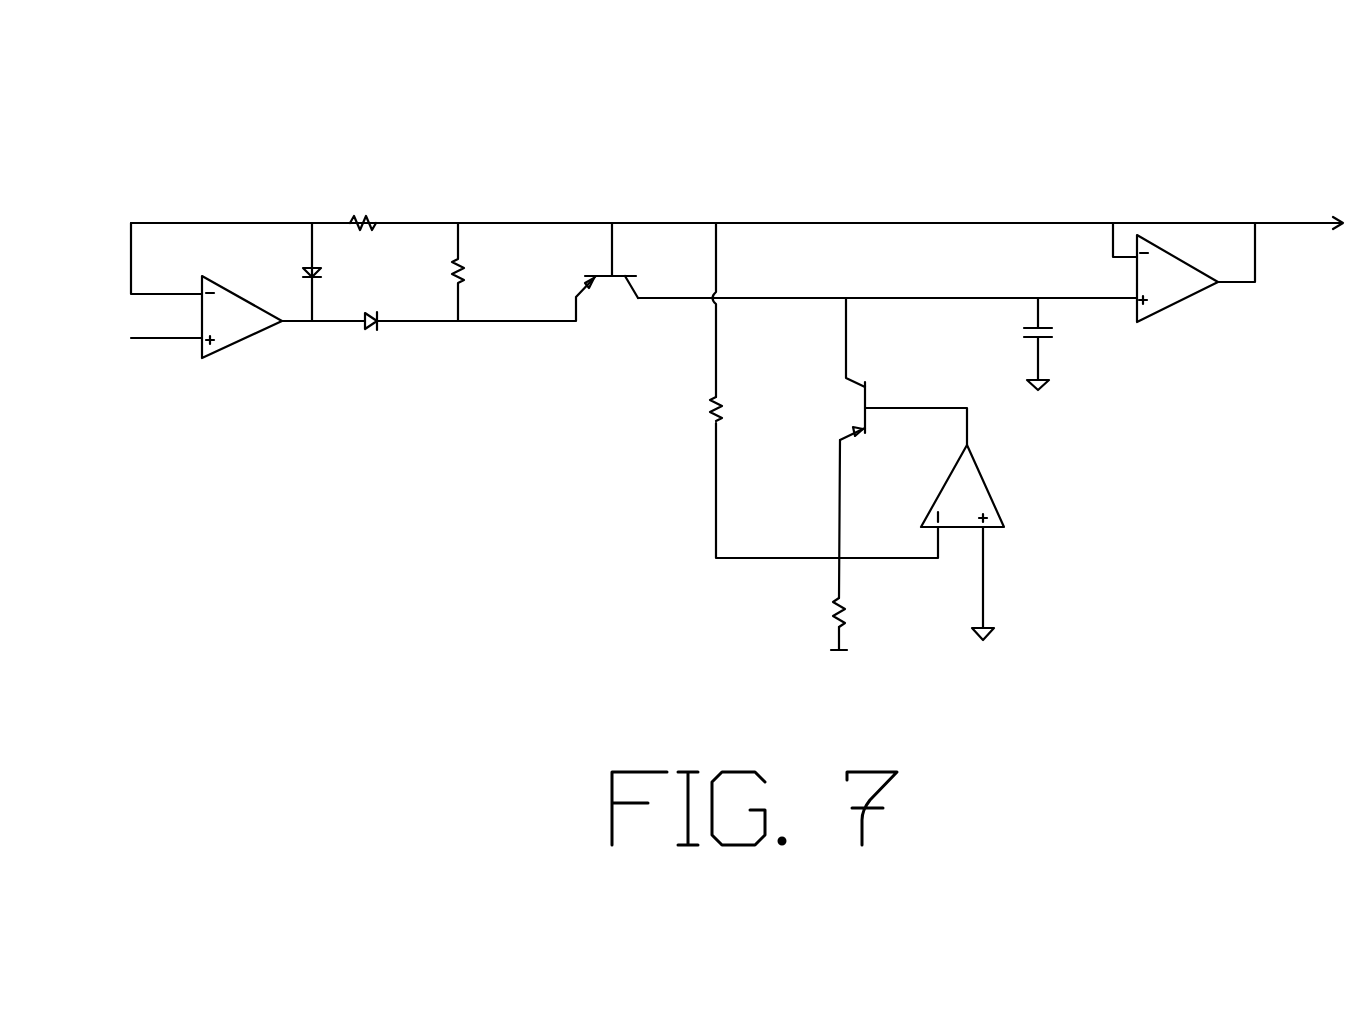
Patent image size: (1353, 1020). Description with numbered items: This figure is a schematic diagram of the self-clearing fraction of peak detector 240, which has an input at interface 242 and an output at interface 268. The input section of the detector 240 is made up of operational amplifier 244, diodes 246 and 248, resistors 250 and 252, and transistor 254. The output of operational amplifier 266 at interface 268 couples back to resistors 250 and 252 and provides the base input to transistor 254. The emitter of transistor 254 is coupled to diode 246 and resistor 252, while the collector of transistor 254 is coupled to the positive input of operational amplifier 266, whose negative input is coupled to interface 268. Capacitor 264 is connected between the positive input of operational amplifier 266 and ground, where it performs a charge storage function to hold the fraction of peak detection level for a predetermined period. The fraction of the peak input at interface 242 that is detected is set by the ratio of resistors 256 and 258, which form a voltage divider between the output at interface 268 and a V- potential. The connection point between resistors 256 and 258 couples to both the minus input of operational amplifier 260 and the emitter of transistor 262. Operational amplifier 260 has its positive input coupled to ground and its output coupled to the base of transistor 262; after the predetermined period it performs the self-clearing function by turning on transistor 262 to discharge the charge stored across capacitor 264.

The self-clearing fraction of peak detector 240 is at (366, 121).
The interface 242 is at (181, 340).
The operational amplifier 244 is at (230, 346).
The diode 246 is at (363, 328).
The diode 248 is at (306, 266).
The resistor 250 is at (372, 229).
The resistor 252 is at (465, 272).
The transistor 254 is at (622, 272).
The resistor 256 is at (700, 400).
The resistor 258 is at (833, 604).
The operational amplifier 260 is at (993, 493).
The transistor 262 is at (852, 415).
The capacitor 264 is at (1020, 336).
The operational amplifier 266 is at (1165, 308).
The interface 268 is at (1323, 229).